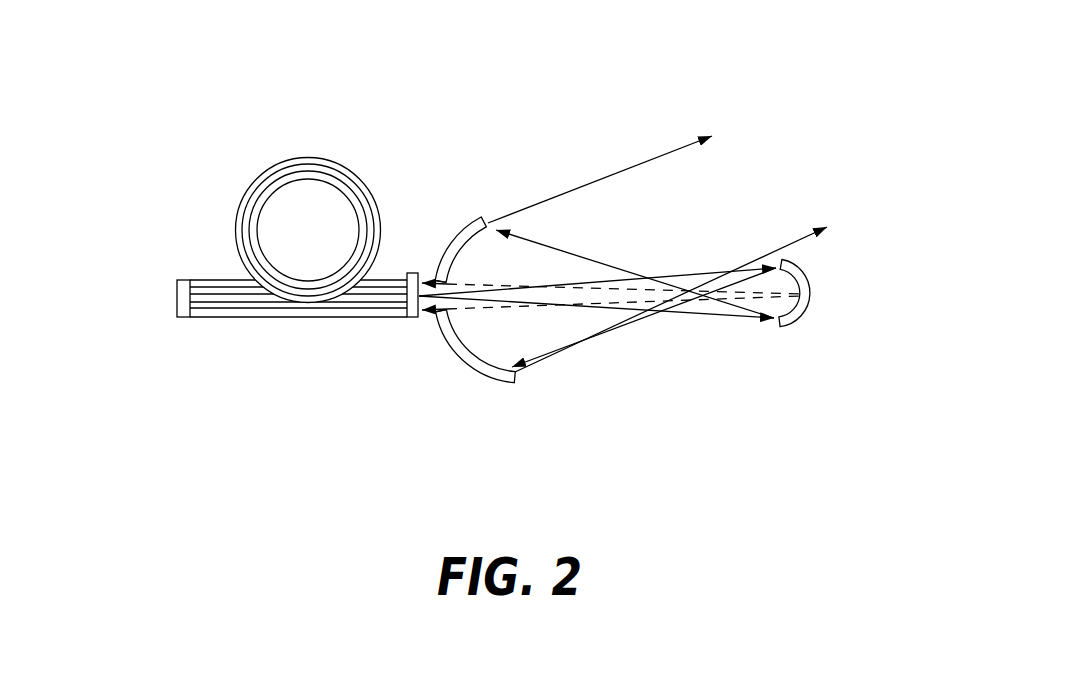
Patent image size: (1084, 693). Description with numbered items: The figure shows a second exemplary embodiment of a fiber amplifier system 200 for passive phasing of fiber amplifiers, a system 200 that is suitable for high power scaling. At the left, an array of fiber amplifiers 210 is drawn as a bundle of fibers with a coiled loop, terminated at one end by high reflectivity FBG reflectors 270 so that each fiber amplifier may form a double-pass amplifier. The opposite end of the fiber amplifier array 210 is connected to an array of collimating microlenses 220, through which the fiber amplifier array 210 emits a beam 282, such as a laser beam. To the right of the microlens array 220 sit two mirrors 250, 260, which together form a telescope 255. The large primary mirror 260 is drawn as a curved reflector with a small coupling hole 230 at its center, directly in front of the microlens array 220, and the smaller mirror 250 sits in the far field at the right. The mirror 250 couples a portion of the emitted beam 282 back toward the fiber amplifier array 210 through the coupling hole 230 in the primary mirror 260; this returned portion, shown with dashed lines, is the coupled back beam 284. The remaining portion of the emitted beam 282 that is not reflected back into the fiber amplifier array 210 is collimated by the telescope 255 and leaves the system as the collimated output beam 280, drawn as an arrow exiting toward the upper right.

The fiber amplifier system 200 is at (818, 78).
The array of fiber amplifiers 210 is at (330, 316).
The array of collimating microlenses 220 is at (415, 267).
The coupling hole 230 is at (428, 322).
The mirror 250 is at (798, 319).
The telescope 255 is at (488, 385).
The primary mirror 260 is at (456, 237).
The high reflectivity FBG 270 is at (172, 325).
The collimated output beam 280 is at (660, 157).
The emitted beam 282 is at (512, 367).
The coupled back beam 284 is at (611, 253).